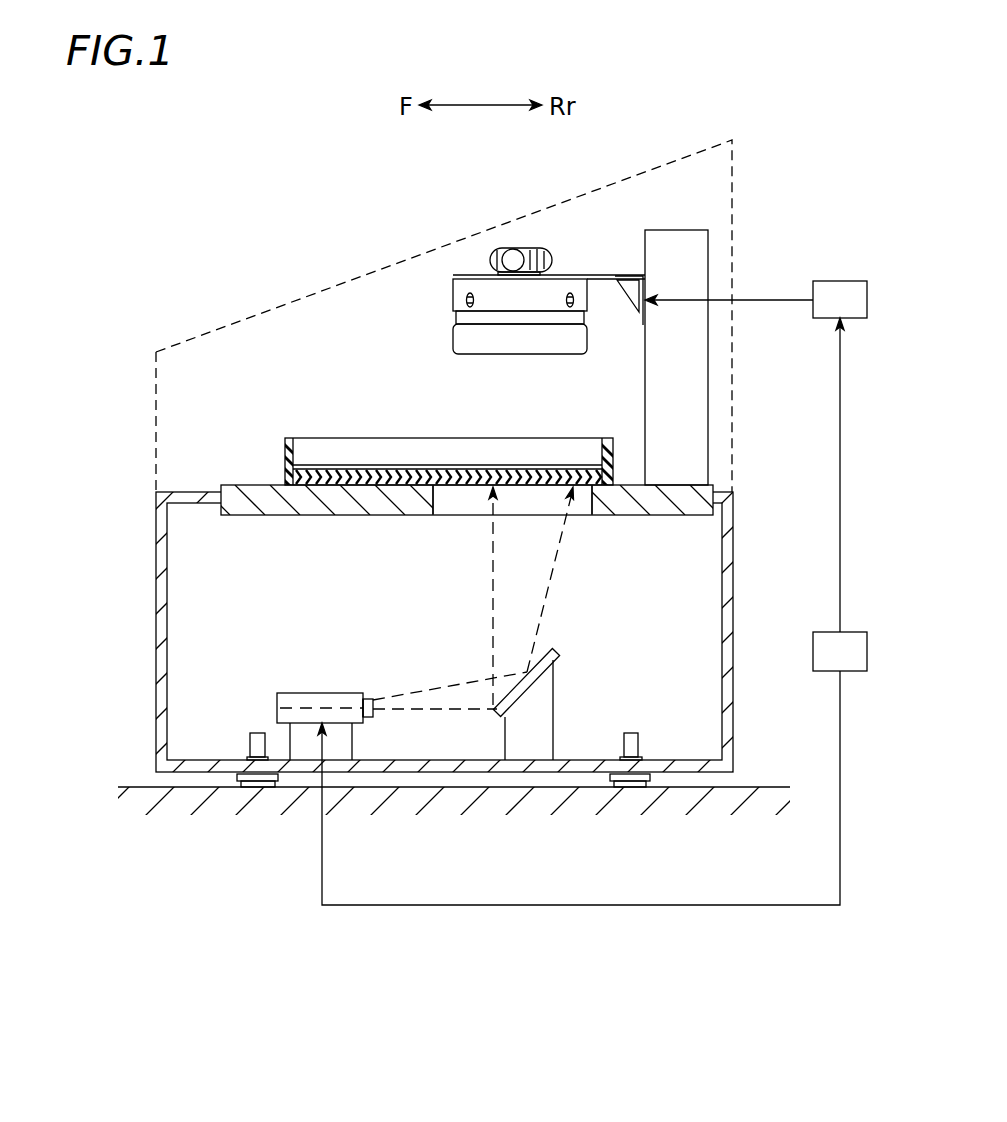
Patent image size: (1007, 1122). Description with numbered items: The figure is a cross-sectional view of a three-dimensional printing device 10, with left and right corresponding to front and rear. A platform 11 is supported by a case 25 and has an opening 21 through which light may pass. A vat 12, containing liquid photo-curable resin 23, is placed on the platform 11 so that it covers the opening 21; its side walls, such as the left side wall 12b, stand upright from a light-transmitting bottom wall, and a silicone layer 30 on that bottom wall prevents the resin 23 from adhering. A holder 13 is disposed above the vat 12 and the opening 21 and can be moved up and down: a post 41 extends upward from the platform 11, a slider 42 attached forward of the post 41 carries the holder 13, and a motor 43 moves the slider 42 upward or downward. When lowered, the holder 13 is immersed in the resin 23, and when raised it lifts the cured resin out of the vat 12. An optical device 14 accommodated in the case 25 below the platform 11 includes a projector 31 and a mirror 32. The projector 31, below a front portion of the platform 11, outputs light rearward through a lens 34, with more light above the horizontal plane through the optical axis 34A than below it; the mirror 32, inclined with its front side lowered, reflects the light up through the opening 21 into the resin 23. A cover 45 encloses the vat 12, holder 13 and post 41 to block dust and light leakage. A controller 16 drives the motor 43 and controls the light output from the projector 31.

The three-dimensional printing device 10 is at (243, 271).
The platform 11 is at (252, 485).
The vat 12 is at (436, 462).
The left side wall 12b is at (555, 490).
The holder 13 is at (445, 329).
The optical device 14 is at (413, 623).
The controller 16 is at (853, 632).
The opening 21 is at (442, 500).
The photo-curable resin 23 is at (326, 463).
The case 25 is at (733, 600).
The silicone layer 30 is at (383, 466).
The projector 31 is at (290, 693).
The mirror 32 is at (560, 648).
The lens 34 is at (368, 699).
The optical axis 34A is at (345, 718).
The post 41 is at (710, 362).
The slider 42 is at (585, 275).
The motor 43 is at (840, 281).
The cover 45 is at (735, 183).